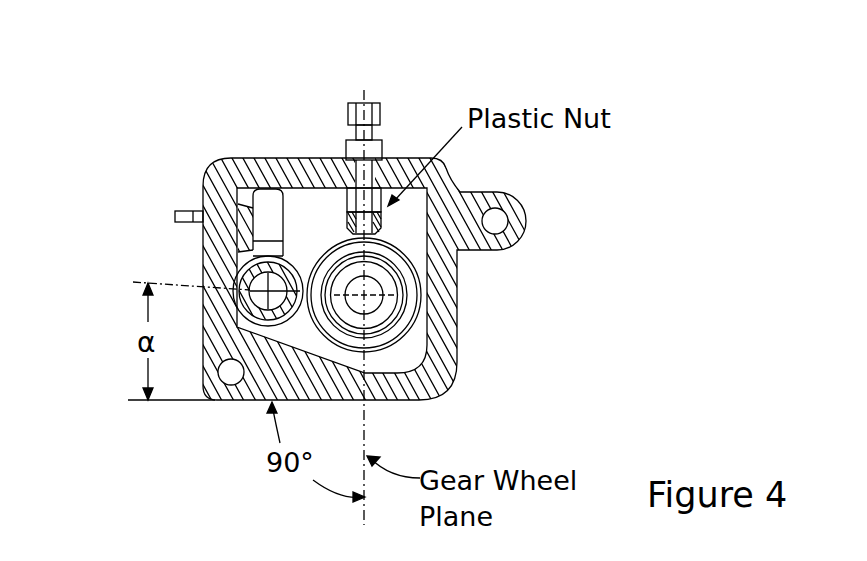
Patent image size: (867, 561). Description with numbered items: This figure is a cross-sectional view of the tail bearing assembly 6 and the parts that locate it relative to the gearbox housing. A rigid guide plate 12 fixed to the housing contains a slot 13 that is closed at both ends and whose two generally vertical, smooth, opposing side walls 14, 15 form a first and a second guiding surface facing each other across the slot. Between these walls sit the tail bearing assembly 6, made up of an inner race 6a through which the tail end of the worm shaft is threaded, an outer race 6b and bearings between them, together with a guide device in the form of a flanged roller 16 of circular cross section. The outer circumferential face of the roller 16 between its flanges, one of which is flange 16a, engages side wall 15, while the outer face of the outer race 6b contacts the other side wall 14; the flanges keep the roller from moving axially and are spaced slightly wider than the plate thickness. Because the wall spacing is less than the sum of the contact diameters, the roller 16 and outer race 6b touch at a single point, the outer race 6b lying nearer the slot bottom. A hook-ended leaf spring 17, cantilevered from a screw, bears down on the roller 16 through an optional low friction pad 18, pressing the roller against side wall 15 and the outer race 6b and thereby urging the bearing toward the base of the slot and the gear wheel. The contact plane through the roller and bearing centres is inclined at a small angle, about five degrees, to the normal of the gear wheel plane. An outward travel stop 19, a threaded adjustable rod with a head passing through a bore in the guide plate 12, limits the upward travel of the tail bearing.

The tail bearing assembly 6 is at (420, 335).
The inner race 6a is at (378, 270).
The outer race 6b is at (406, 380).
The guide plate 12 is at (450, 370).
The slot 13 is at (425, 203).
The side wall 14 is at (424, 280).
The side wall 15 is at (246, 228).
The roller 16 is at (240, 280).
The flange 16a is at (265, 332).
The leaf spring 17 is at (262, 212).
The low friction pad 18 is at (274, 250).
The outward travel stop 19 is at (408, 148).